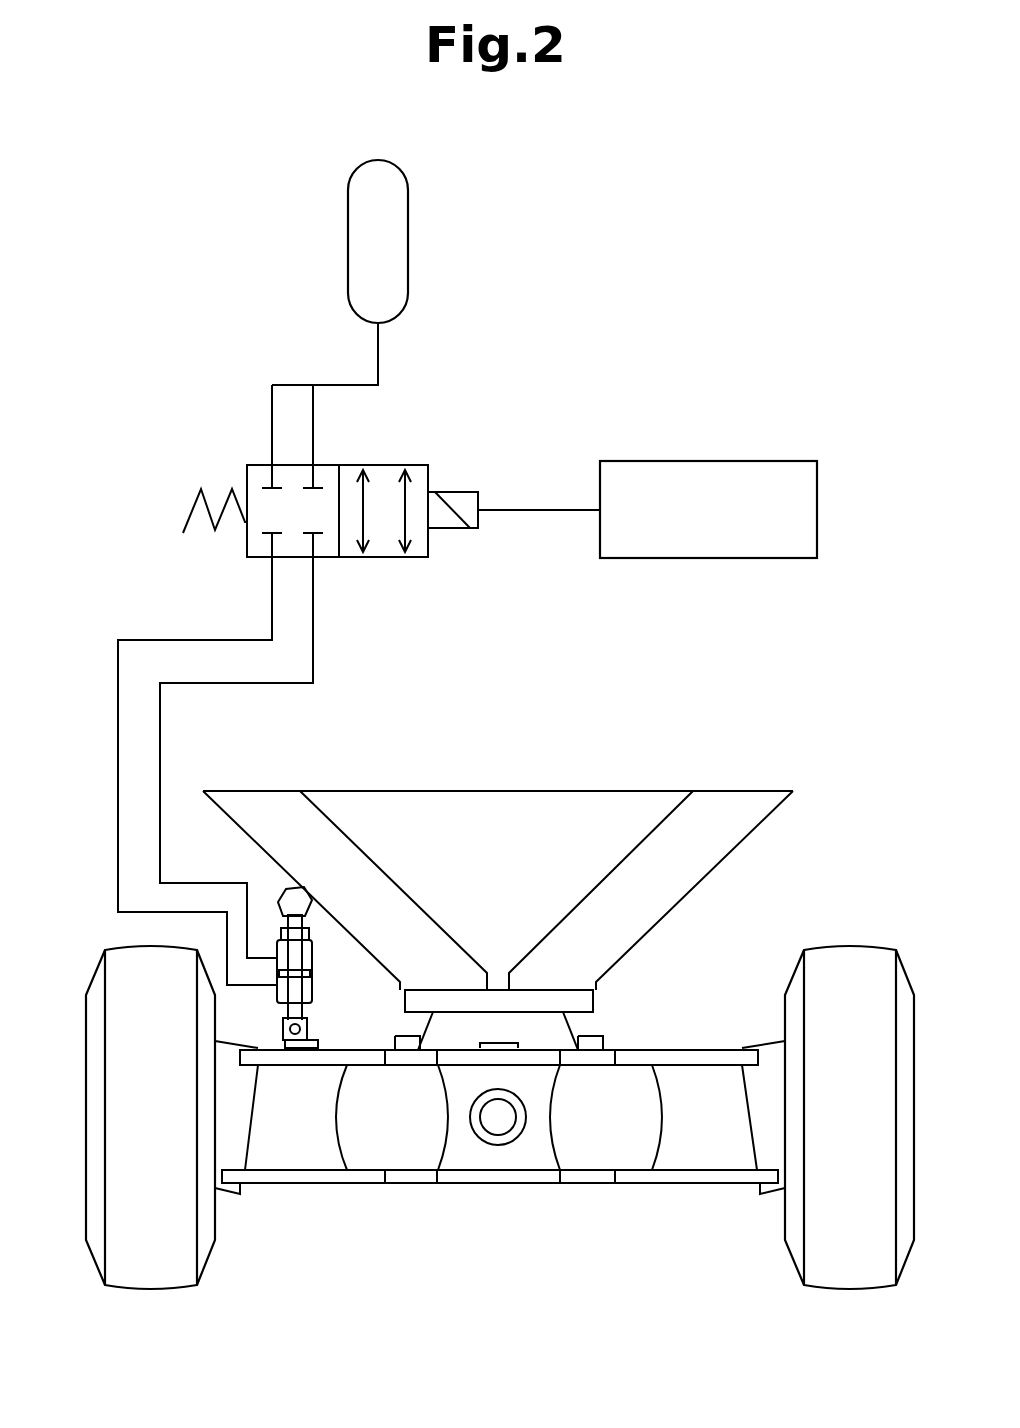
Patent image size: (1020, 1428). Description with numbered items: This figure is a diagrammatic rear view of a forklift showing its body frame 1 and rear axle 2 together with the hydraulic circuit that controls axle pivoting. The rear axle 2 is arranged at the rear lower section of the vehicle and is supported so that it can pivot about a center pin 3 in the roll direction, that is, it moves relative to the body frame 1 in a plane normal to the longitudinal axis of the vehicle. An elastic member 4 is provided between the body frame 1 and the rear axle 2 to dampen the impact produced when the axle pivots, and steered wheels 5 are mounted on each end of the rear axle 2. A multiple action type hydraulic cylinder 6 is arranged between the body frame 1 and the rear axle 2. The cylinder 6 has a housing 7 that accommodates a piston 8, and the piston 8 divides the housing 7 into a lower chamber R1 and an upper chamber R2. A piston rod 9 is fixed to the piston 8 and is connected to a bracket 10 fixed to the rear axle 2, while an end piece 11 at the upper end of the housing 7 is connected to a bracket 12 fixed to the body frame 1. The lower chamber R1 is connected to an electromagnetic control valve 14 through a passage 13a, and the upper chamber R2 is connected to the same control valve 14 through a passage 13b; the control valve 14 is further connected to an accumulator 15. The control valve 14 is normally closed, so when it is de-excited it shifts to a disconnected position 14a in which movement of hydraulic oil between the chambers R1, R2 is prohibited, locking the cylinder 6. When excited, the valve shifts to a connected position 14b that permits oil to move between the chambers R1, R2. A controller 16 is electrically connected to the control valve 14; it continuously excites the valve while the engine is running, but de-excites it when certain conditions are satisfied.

The body frame 1 is at (735, 790).
The rear axle 2 is at (680, 1183).
The center pin 3 is at (527, 1117).
The elastic member 4 is at (575, 1024).
The wheels 5 is at (150, 1292).
The hydraulic cylinder 6 is at (302, 979).
The housing 7 is at (312, 1000).
The piston 8 is at (311, 976).
The piston rod 9 is at (306, 1021).
The bracket 10 is at (300, 1050).
The end piece 11 is at (306, 914).
The bracket 12 is at (293, 887).
The passage 13a is at (118, 778).
The passage 13b is at (162, 737).
The electromagnetic control valve 14 is at (332, 501).
The disconnected position 14a is at (256, 557).
The connected position 14b is at (428, 557).
The accumulator 15 is at (408, 240).
The controller 16 is at (818, 512).
The lower chamber R1 is at (277, 986).
The upper chamber R2 is at (278, 950).